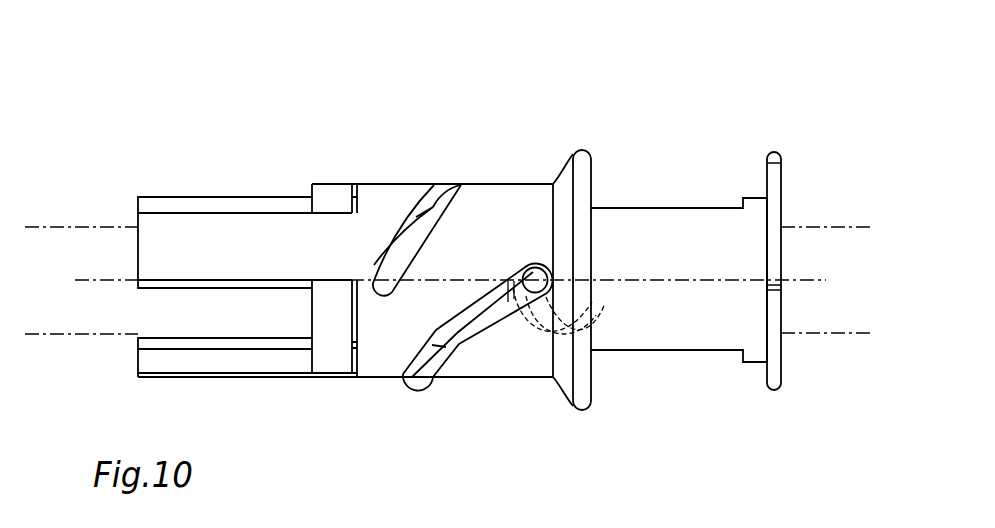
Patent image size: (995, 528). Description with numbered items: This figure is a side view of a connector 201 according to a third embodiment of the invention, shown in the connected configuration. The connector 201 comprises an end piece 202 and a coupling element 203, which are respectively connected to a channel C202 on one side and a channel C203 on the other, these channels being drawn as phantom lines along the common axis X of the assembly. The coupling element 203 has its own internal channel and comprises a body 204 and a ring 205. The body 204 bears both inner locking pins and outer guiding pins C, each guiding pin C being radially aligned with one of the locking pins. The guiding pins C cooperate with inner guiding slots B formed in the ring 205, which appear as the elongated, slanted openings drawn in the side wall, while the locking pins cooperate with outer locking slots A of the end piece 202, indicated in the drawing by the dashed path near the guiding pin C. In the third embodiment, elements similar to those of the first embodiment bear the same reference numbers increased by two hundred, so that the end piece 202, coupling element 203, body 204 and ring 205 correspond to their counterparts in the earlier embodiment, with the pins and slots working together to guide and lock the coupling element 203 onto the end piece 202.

The connector 201 is at (367, 116).
The end piece 202 is at (160, 208).
The coupling element 203 is at (691, 61).
The body 204 is at (772, 152).
The ring 205 is at (582, 158).
The outer locking slots A is at (586, 327).
The inner guiding slots B is at (429, 200).
The guiding pins C is at (537, 279).
The channel C202 is at (58, 227).
The channel C203 is at (831, 227).
The longitudinal axis X-X' X is at (450, 285).